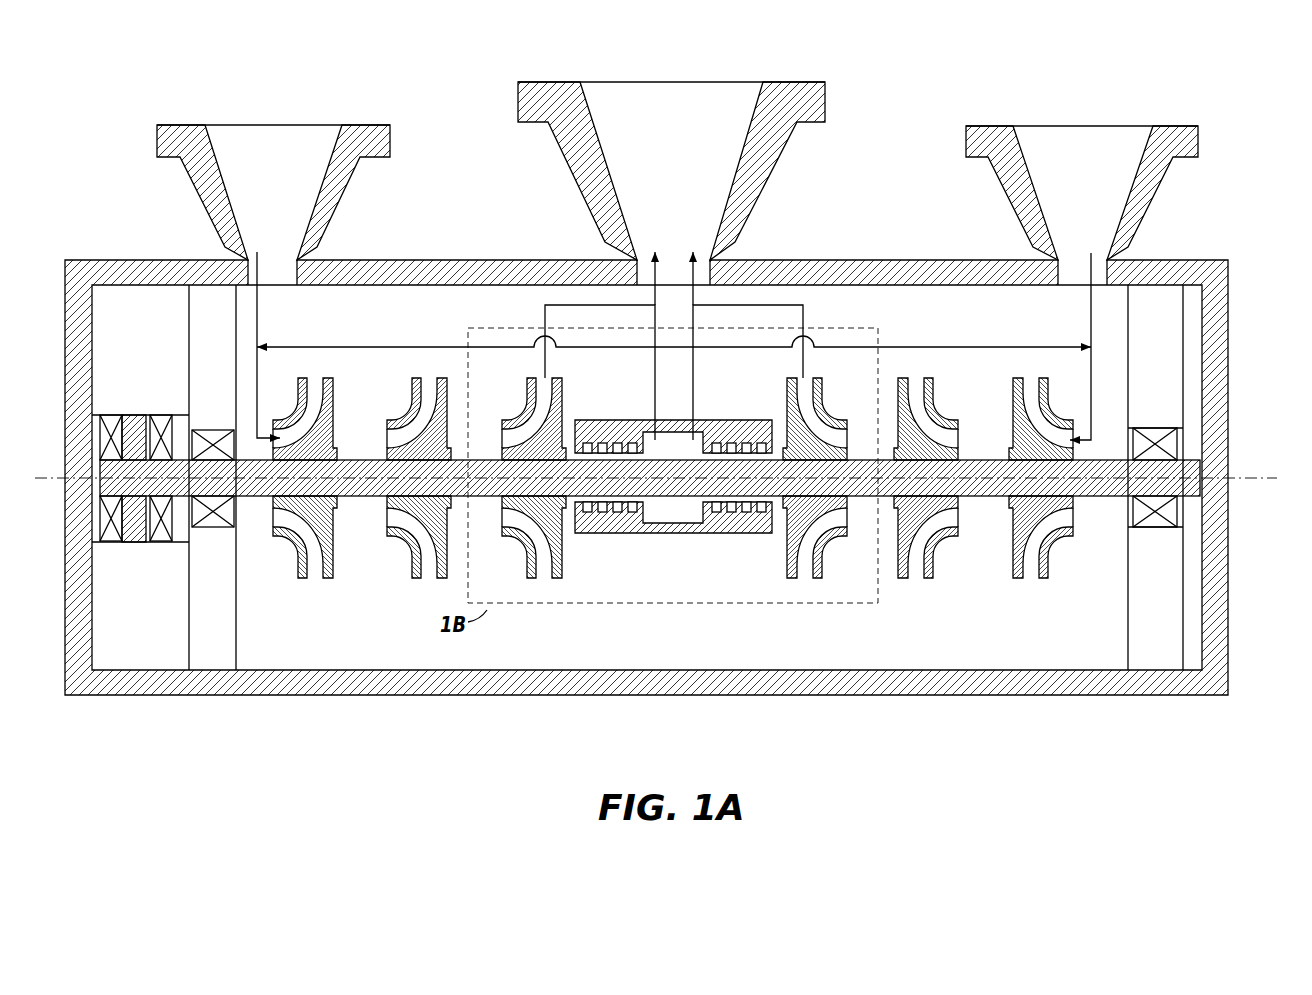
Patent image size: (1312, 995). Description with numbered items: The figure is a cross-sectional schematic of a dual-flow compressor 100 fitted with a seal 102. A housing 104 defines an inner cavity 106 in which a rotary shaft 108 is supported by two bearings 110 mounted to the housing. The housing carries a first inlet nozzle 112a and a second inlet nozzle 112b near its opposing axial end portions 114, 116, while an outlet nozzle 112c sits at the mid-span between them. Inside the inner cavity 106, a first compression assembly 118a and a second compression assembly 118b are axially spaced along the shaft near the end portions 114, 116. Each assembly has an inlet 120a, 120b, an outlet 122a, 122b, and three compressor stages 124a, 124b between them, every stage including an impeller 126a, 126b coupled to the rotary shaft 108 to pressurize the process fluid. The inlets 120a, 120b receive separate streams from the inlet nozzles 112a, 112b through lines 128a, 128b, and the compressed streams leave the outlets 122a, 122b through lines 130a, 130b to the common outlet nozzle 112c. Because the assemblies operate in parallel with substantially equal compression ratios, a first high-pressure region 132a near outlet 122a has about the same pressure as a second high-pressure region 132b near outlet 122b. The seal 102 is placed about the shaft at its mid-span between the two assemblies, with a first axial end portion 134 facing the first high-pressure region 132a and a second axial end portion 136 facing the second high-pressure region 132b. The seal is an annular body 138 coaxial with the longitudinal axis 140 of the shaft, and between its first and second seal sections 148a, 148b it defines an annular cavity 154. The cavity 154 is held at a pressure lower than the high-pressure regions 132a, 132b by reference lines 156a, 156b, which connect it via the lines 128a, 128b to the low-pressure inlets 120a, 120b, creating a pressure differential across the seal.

The compressor 100 is at (165, 52).
The seal 102 is at (635, 568).
The housing 104 is at (390, 695).
The inner cavity 106 is at (712, 648).
The rotary shaft 108 is at (1197, 470).
The bearings 110 is at (212, 435).
The first inlet nozzle 112a is at (157, 140).
The second inlet nozzle 112b is at (966, 140).
The outlet nozzle 112c is at (518, 97).
The axial end portion 114 is at (182, 697).
The axial end portion 116 is at (1155, 697).
The first compression assembly 118a is at (267, 648).
The second compression assembly 118b is at (1047, 648).
The inlet 120a is at (270, 517).
The inlet 120b is at (1080, 515).
The outlet 122a is at (545, 582).
The outlet 122b is at (805, 583).
The compressor stages 124a is at (413, 555).
The compressor stages 124b is at (827, 553).
The impeller 126a is at (397, 420).
The impeller 126b is at (820, 412).
The line 128a is at (262, 336).
The line 128b is at (1088, 330).
The line 130a is at (545, 322).
The line 130b is at (803, 322).
The first high-pressure region 132a is at (646, 375).
The second high-pressure region 132b is at (753, 375).
The first axial end portion 134 is at (630, 420).
The second axial end portion 136 is at (720, 420).
The annular body 138 is at (688, 537).
The longitudinal axis 140 is at (1252, 483).
The first seal section 148a is at (608, 528).
The second seal section 148b is at (763, 527).
The cavity 154 is at (692, 522).
The reference line 156a is at (388, 345).
The reference line 156b is at (930, 345).